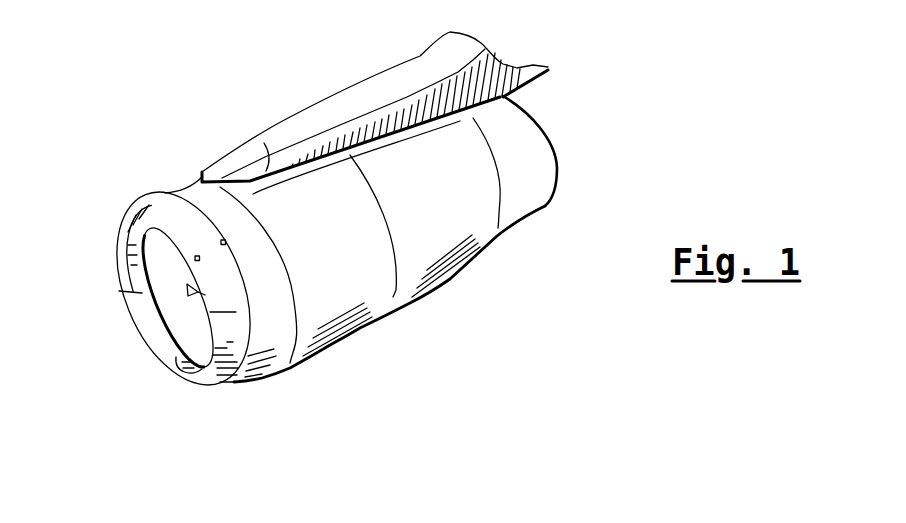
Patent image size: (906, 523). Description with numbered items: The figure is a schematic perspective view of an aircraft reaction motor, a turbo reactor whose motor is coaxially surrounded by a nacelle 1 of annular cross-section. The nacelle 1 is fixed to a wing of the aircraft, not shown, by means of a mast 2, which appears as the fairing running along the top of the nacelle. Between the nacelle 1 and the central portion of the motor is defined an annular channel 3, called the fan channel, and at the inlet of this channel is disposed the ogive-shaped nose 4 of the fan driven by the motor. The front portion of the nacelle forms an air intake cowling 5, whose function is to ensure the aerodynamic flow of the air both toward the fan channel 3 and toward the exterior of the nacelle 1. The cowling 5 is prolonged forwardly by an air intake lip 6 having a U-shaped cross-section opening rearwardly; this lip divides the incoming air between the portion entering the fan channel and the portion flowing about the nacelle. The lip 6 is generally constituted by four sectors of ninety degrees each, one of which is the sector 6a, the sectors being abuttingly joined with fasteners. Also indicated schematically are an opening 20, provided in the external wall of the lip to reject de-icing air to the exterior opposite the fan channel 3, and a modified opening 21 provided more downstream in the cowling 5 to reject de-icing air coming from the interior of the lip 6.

The nacelle 1 is at (450, 279).
The mast 2 is at (393, 58).
The annular channel 3 is at (182, 320).
The nose of the fan 4 is at (181, 283).
The air intake cowling 5 is at (268, 390).
The air intake lip 6 is at (120, 210).
The sector of the lip 6a is at (130, 260).
The opening 20 is at (197, 257).
The opening 21 is at (222, 242).